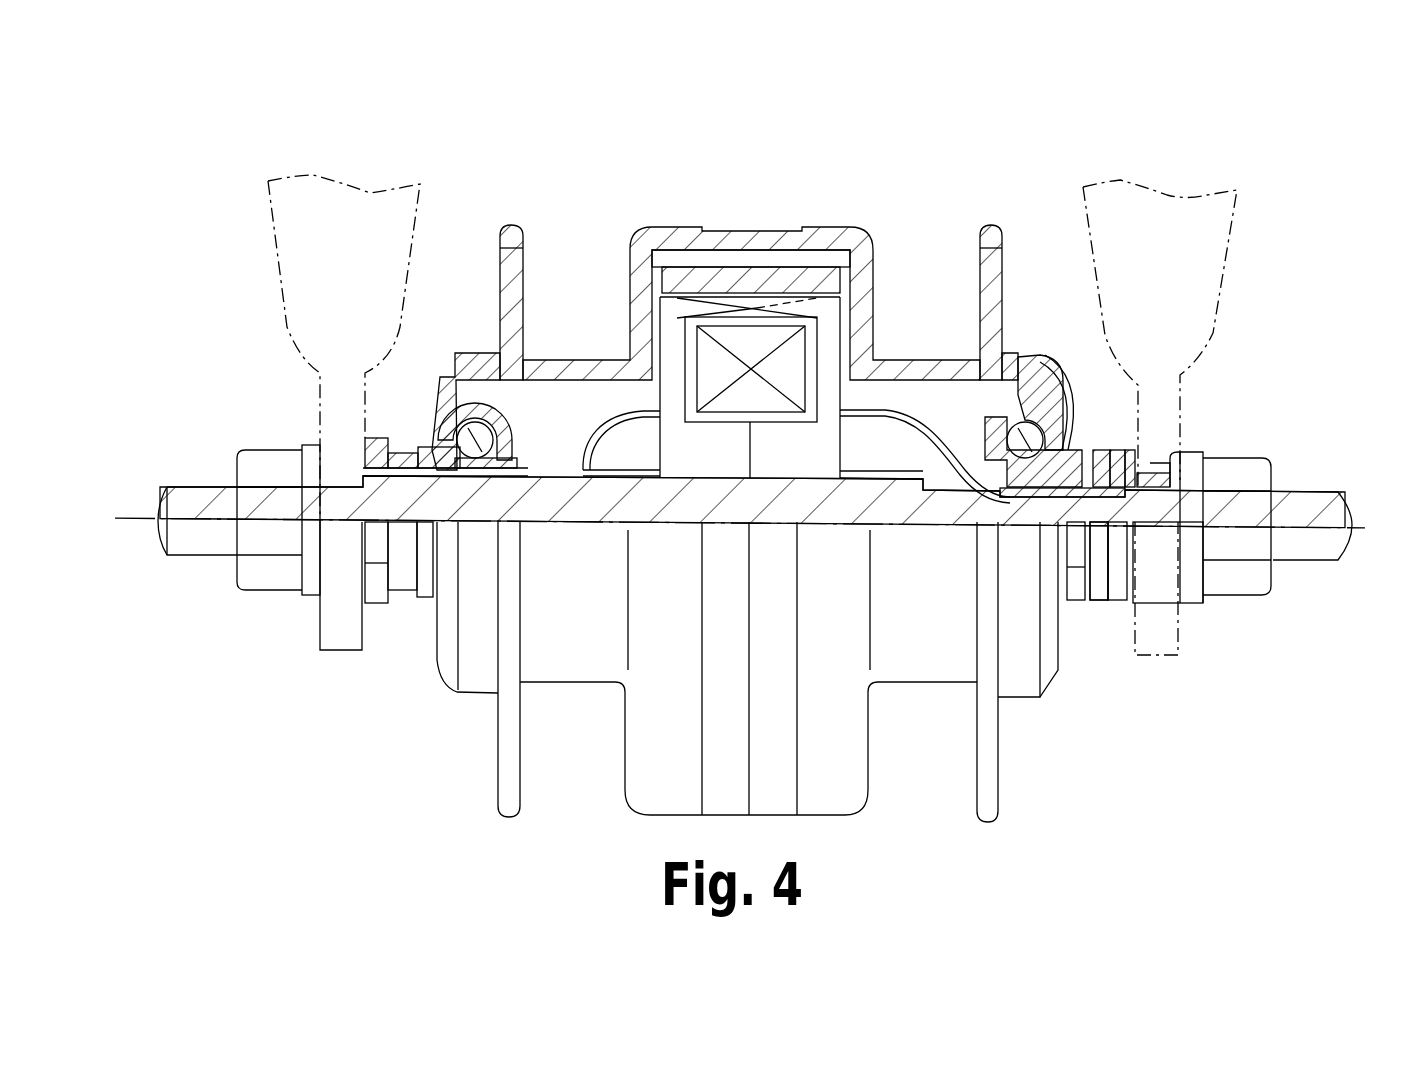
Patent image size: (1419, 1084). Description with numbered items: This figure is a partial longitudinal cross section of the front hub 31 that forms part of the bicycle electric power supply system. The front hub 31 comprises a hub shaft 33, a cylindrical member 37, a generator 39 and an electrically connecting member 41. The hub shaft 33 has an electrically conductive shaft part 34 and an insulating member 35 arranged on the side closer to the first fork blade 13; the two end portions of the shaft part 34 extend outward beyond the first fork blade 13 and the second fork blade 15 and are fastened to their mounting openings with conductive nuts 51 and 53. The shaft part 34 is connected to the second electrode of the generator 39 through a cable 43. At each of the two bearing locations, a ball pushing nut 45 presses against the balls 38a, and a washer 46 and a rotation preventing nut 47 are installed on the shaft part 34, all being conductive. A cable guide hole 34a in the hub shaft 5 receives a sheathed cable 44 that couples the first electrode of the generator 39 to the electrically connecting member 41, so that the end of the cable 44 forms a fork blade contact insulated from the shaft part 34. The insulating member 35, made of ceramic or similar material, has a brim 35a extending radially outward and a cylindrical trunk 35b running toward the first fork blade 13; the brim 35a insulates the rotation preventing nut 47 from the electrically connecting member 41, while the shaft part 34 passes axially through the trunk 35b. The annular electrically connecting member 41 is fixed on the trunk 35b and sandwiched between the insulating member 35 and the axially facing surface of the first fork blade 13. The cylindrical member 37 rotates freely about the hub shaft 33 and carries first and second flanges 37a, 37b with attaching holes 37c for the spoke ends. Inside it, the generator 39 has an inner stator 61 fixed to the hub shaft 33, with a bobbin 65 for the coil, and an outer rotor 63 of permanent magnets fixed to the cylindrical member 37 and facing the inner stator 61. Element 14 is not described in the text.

The hub shaft 5 is at (1350, 497).
The first fork blade 13 is at (1213, 243).
The washer 14 is at (1183, 452).
The second fork blade 15 is at (298, 243).
The front hub 31 is at (445, 752).
The hub shaft 33 is at (168, 565).
The shaft part 34 is at (215, 484).
The cable guide hole 34a is at (1075, 440).
The insulating member 35 is at (1118, 438).
The brim 35a is at (1100, 600).
The cylindrical trunk 35b is at (1203, 467).
The cylindrical member 37 is at (857, 229).
The first flange 37a is at (511, 223).
The second flange 37b is at (992, 223).
The attaching holes 37c is at (498, 270).
The balls 38a is at (476, 440).
The generator 39 is at (805, 258).
The electrically connecting member 41 is at (1122, 440).
The cable 43 is at (570, 468).
The cable 44 is at (930, 480).
The ball pushing nut 45 is at (433, 605).
The washer 46 is at (405, 596).
The rotation preventing nut 47 is at (372, 606).
The nut 51 is at (1247, 600).
The nut 53 is at (258, 592).
The inner stator 61 is at (810, 485).
The outer rotor 63 is at (687, 282).
The bobbin 65 is at (710, 360).